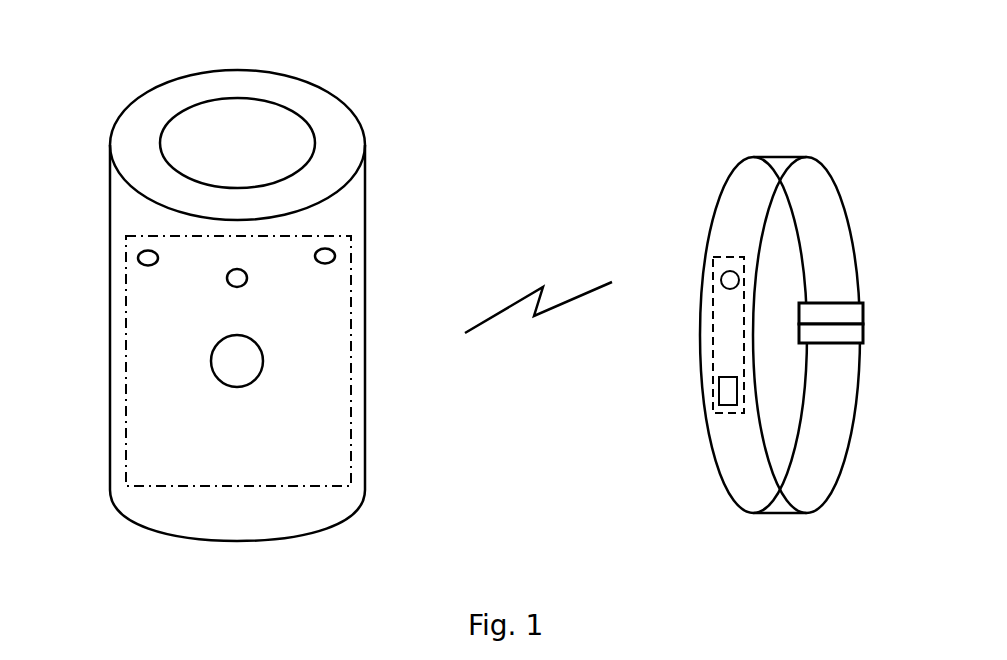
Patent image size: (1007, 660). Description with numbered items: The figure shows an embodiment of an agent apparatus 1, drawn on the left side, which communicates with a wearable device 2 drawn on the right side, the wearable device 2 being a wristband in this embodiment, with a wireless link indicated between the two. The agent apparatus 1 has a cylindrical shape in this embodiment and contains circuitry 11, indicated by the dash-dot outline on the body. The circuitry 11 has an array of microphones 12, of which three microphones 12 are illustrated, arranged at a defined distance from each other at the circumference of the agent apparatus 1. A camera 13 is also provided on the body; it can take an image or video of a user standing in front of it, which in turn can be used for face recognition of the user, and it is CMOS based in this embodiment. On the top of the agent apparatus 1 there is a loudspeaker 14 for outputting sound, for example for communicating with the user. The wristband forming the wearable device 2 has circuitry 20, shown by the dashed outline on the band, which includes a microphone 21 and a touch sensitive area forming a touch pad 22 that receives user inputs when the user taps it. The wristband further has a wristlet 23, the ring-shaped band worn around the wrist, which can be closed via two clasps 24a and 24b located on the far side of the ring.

The agent apparatus 1 is at (252, 42).
The wearable device 2 is at (790, 124).
The circuitry 11 is at (350, 462).
The microphones 12 is at (138, 258).
The camera 13 is at (212, 362).
The loudspeaker 14 is at (300, 116).
The circuitry 20 is at (713, 338).
The microphone 21 is at (721, 275).
The touch pad 22 is at (719, 393).
The wristlet 23 is at (838, 190).
The clasp 24a is at (863, 312).
The clasp 24b is at (863, 335).